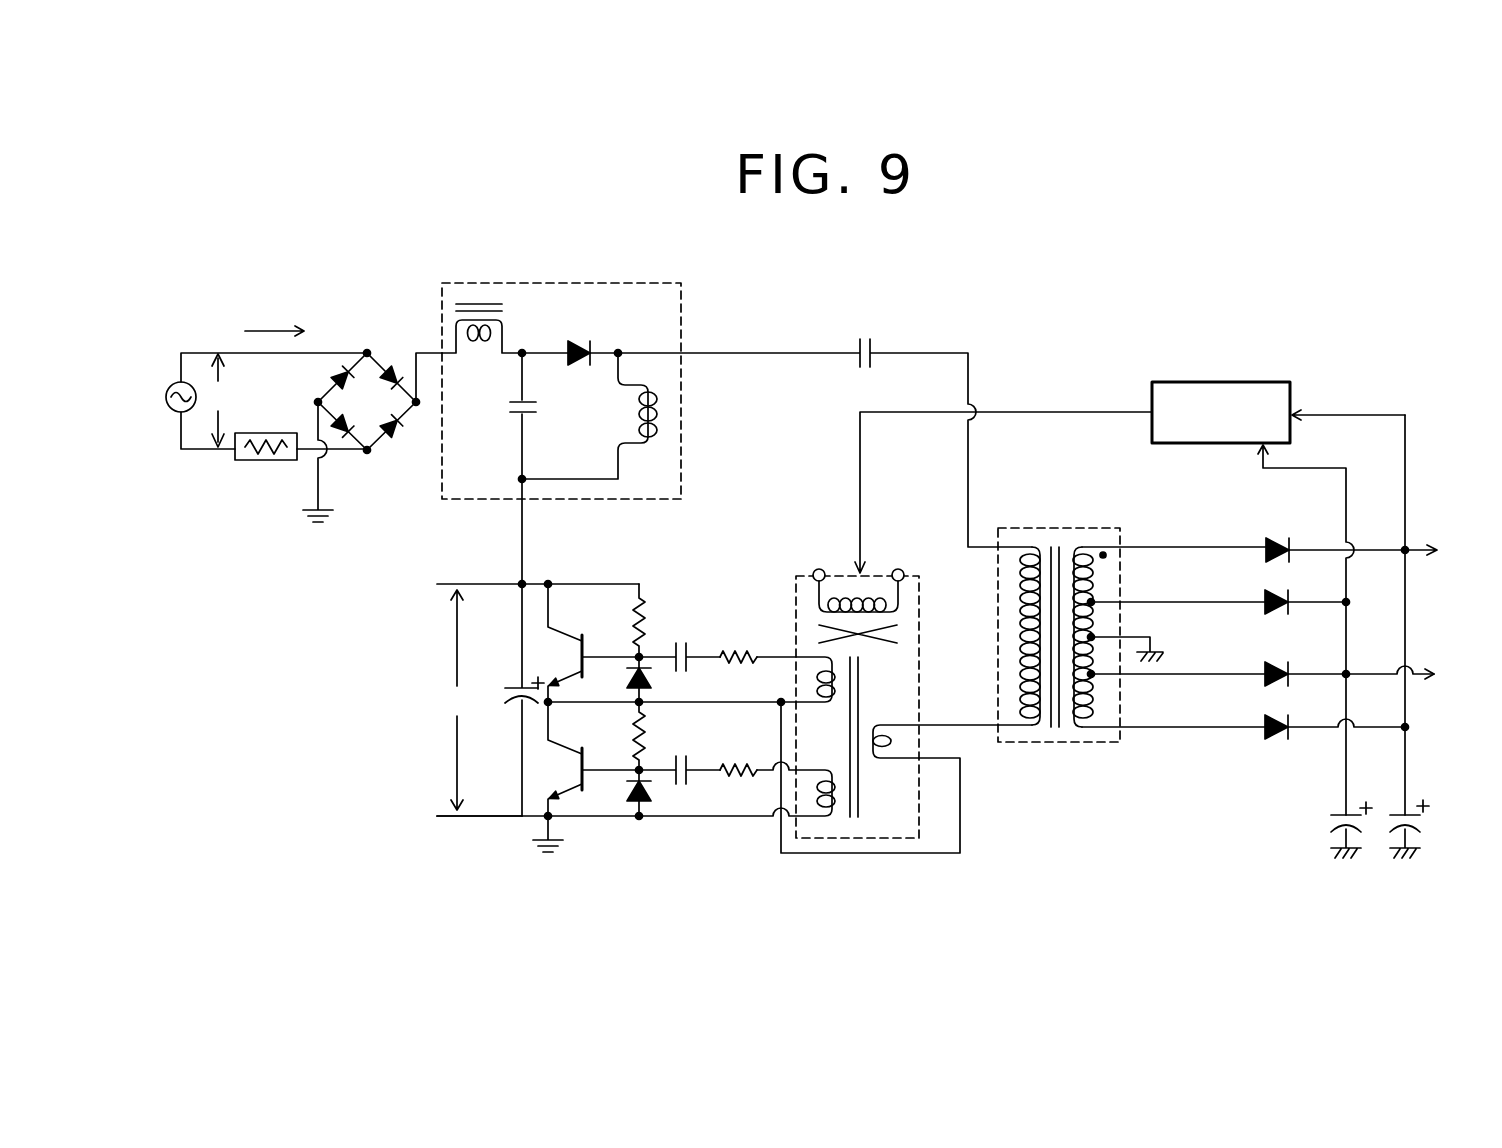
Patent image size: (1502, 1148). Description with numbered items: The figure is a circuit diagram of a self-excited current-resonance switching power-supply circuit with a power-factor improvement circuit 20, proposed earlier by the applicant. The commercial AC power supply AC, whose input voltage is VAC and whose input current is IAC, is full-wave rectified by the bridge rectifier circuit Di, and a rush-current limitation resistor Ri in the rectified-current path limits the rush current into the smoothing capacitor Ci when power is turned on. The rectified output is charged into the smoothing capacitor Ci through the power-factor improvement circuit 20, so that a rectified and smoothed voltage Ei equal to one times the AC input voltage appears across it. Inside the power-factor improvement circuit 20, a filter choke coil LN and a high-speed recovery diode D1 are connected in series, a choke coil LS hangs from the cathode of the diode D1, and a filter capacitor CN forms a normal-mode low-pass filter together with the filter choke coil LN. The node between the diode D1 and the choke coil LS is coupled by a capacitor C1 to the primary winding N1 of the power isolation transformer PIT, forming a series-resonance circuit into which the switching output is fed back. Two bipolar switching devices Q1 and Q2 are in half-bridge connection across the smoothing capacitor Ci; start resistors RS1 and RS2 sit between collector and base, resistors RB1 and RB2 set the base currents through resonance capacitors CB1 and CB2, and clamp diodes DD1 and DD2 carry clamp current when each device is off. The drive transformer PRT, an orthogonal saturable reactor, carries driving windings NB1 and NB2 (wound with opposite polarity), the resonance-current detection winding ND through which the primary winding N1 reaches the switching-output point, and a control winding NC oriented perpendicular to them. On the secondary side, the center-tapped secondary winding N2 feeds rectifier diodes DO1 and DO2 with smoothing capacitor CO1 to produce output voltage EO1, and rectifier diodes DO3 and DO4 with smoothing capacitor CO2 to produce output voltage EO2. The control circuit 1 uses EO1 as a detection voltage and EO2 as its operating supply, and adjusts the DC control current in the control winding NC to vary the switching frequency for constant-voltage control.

The commercial AC power supply AC is at (256, 401).
The AC input voltage VAC is at (232, 400).
The AC input current IAC is at (301, 334).
The rush-current limitation resistor Ri is at (301, 462).
The bridge rectifier circuit Di is at (380, 412).
The power-factor improvement circuit 20 is at (549, 282).
The filter choke coil LN is at (482, 337).
The filter capacitor CN is at (502, 416).
The high-speed recovery diode D1 is at (570, 337).
The choke coil LS is at (589, 415).
The series-resonance capacitor C1 is at (825, 429).
The control circuit 1 is at (1222, 382).
The drive transformer PRT is at (861, 691).
The control winding NC is at (850, 592).
The driving winding NB1 is at (813, 688).
The driving winding NB2 is at (813, 788).
The resonance-current detection winding ND is at (897, 742).
The power isolation transformer PIT is at (1059, 620).
The primary winding N1 is at (1021, 658).
The secondary winding N2 is at (1093, 585).
The rectifier diode DO1 is at (1243, 534).
The rectifier diode DO2 is at (1245, 713).
The rectifier diode DO3 is at (1220, 588).
The rectifier diode DO4 is at (1262, 658).
The direct-current output voltage EO1 is at (1446, 552).
The direct-current output voltage EO2 is at (1458, 677).
The smoothing capacitor CO1 is at (1432, 829).
The smoothing capacitor CO2 is at (1320, 830).
The rectified and smoothed voltage Ei is at (479, 700).
The smoothing capacitor Ci is at (510, 647).
The switching device Q1 is at (586, 643).
The switching device Q2 is at (586, 759).
The start resistor RS1 is at (614, 622).
The start resistor RS2 is at (612, 736).
The resonance capacitor CB1 is at (679, 643).
The resonance capacitor CB2 is at (679, 757).
The resistor RB1 is at (741, 644).
The resistor RB2 is at (741, 757).
The clamp diode DD1 is at (667, 679).
The clamp diode DD2 is at (668, 795).